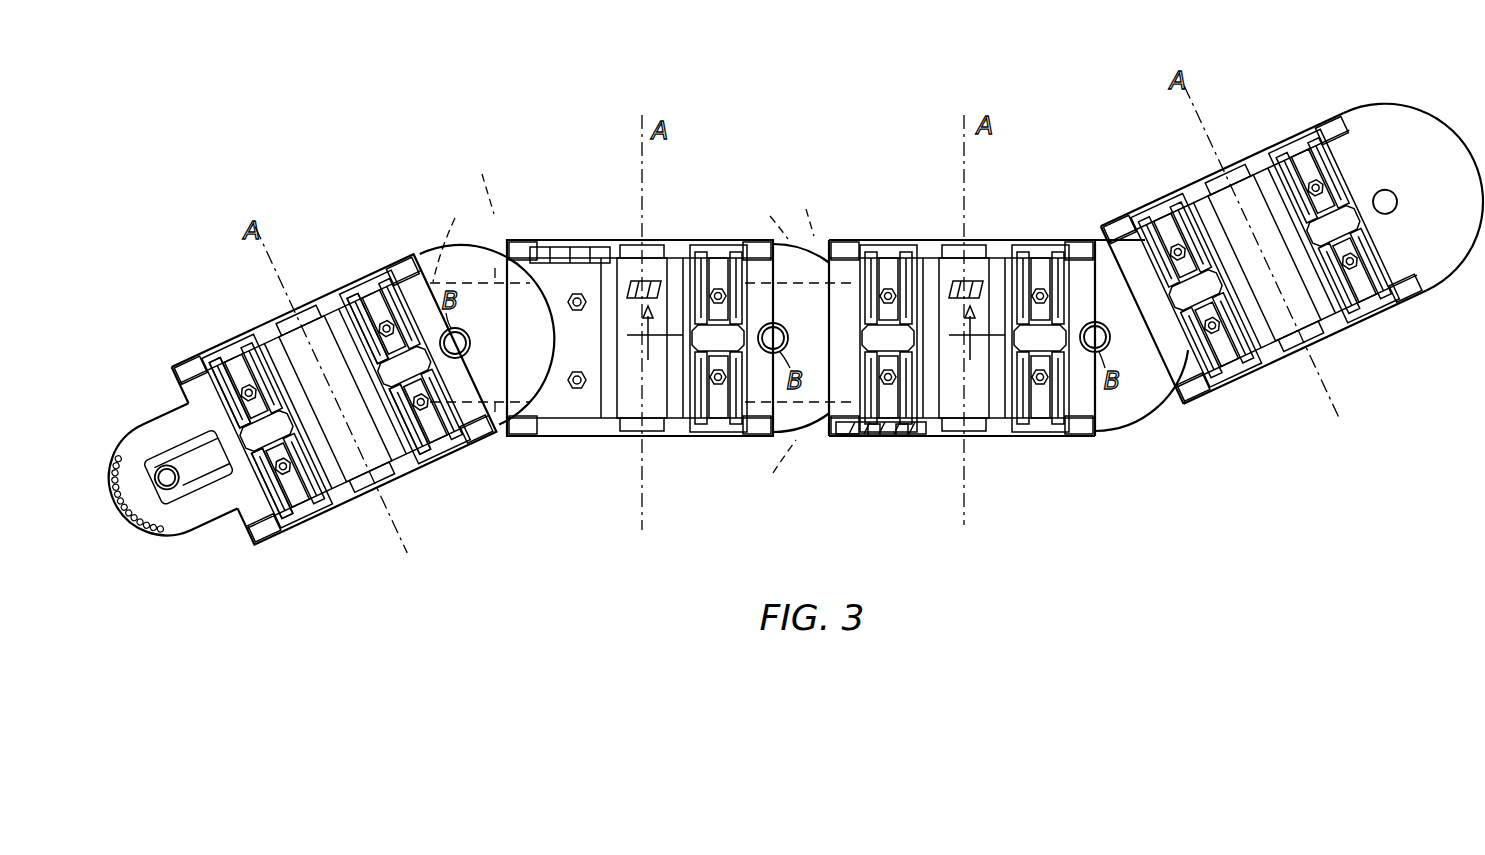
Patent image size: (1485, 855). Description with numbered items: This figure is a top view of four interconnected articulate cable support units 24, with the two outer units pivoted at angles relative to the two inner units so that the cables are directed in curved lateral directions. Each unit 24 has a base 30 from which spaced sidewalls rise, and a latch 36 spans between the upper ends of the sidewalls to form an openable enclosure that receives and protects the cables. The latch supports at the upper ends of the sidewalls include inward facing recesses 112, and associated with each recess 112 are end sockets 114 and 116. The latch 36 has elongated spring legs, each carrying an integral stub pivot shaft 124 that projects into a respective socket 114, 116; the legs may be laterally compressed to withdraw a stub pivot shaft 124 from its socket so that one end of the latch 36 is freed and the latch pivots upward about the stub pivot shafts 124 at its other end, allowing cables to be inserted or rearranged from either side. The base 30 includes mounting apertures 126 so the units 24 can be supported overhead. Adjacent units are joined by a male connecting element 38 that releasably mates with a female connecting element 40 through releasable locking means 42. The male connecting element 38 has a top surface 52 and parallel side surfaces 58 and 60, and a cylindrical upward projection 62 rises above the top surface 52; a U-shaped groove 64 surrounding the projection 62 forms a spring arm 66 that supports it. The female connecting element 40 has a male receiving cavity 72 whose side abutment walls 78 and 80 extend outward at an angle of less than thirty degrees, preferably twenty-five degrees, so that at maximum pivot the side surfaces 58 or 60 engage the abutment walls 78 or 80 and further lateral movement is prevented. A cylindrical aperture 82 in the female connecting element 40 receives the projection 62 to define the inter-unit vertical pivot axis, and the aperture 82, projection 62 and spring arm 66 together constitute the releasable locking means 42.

The articulate cable support unit 24 is at (347, 283).
The base 30 is at (1238, 250).
The latch 36 is at (286, 392).
The male connecting element 38 is at (174, 526).
The female connecting element 40 is at (1416, 199).
The releasable locking means 42 is at (467, 364).
The top surface 52 is at (166, 540).
The side surface 58 is at (162, 413).
The side surface 60 is at (218, 522).
The cylindrical upward projection 62 is at (180, 472).
The U-shaped groove 64 is at (170, 447).
The spring arm 66 is at (205, 477).
The male receiving cavity 72 is at (638, 191).
The side abutment wall 78 is at (610, 233).
The side abutment wall 80 is at (766, 469).
The cylindrical aperture 82 is at (1398, 201).
The inward facing recess 112 is at (247, 355).
The end socket 114 is at (874, 440).
The end socket 116 is at (901, 440).
The stub pivot shaft 124 is at (531, 247).
The mounting aperture 126 is at (591, 331).